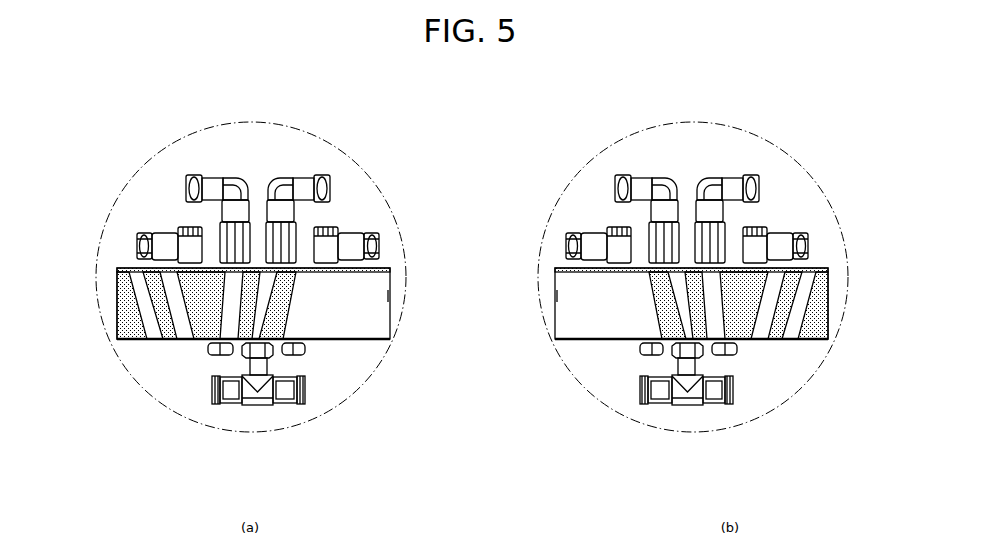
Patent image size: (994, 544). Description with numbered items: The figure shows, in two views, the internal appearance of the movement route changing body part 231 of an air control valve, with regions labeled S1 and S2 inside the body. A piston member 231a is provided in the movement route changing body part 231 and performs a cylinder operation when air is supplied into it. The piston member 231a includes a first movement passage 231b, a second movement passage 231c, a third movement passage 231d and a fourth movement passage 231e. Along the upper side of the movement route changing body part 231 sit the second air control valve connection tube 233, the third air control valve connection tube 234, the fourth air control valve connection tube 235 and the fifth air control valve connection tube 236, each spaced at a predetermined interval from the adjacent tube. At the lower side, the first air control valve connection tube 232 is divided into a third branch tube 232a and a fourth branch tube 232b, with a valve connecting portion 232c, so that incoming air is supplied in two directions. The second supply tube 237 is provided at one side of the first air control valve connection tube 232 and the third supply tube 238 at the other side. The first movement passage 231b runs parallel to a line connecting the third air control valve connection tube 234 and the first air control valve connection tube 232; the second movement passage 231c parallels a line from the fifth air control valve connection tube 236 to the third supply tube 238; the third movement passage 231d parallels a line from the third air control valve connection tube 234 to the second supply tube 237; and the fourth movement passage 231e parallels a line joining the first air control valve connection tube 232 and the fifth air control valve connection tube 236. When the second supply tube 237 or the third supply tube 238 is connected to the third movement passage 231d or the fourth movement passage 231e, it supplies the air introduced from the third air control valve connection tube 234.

The movement route changing body part 231 is at (392, 285).
The piston member 231a is at (160, 318).
The first movement passage 231b is at (150, 314).
The second movement passage 231c is at (205, 317).
The third movement passage 231d is at (248, 320).
The fourth movement passage 231e is at (292, 323).
The first air control valve connection tube 232 is at (472, 419).
The third branch tube 232a is at (293, 404).
The fourth branch tube 232b is at (228, 404).
The valve connecting portion 232c is at (259, 405).
The second air control valve connection tube 233 is at (137, 244).
The third air control valve connection tube 234 is at (212, 176).
The fourth air control valve connection tube 235 is at (380, 245).
The fifth air control valve connection tube 236 is at (304, 178).
The second supply tube 237 is at (216, 356).
The third supply tube 238 is at (290, 370).
The first region S1 is at (377, 327).
The second region S2 is at (577, 307).